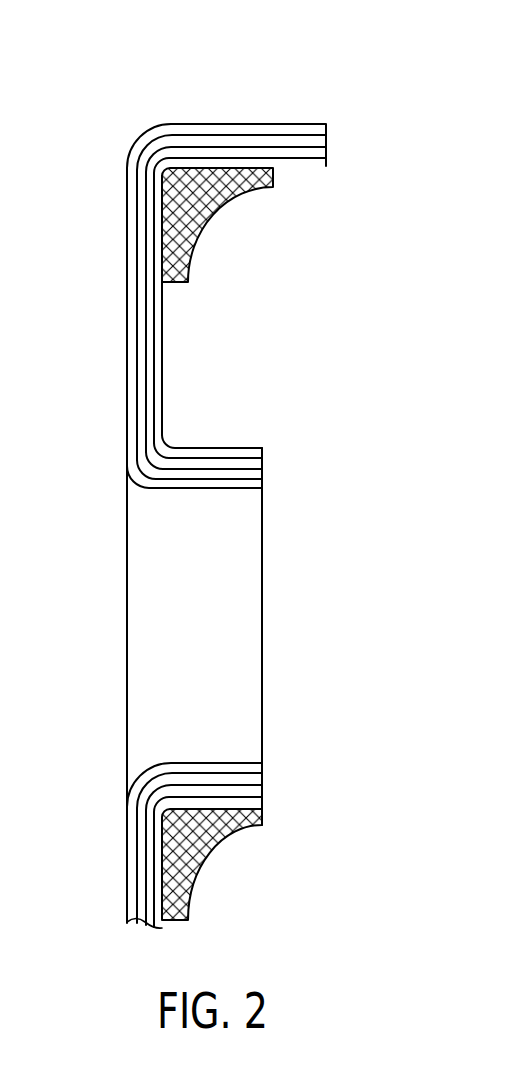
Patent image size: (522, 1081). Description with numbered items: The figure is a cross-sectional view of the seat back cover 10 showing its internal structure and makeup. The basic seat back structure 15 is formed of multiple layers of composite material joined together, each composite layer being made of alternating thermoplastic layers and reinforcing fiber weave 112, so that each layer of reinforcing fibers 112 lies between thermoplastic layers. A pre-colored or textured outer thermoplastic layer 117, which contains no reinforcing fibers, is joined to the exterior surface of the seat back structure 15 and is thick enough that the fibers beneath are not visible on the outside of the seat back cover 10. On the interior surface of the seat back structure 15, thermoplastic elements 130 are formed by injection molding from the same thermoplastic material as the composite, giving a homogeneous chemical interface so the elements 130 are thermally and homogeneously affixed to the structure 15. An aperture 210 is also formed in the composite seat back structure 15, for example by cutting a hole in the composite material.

The seat back cover 10 is at (190, 96).
The seat back structure 15 is at (118, 328).
The reinforcing fiber weave 112 is at (287, 174).
The outer thermoplastic layer 117 is at (279, 115).
The thermoplastic element 130 is at (193, 215).
The aperture 210 is at (148, 613).